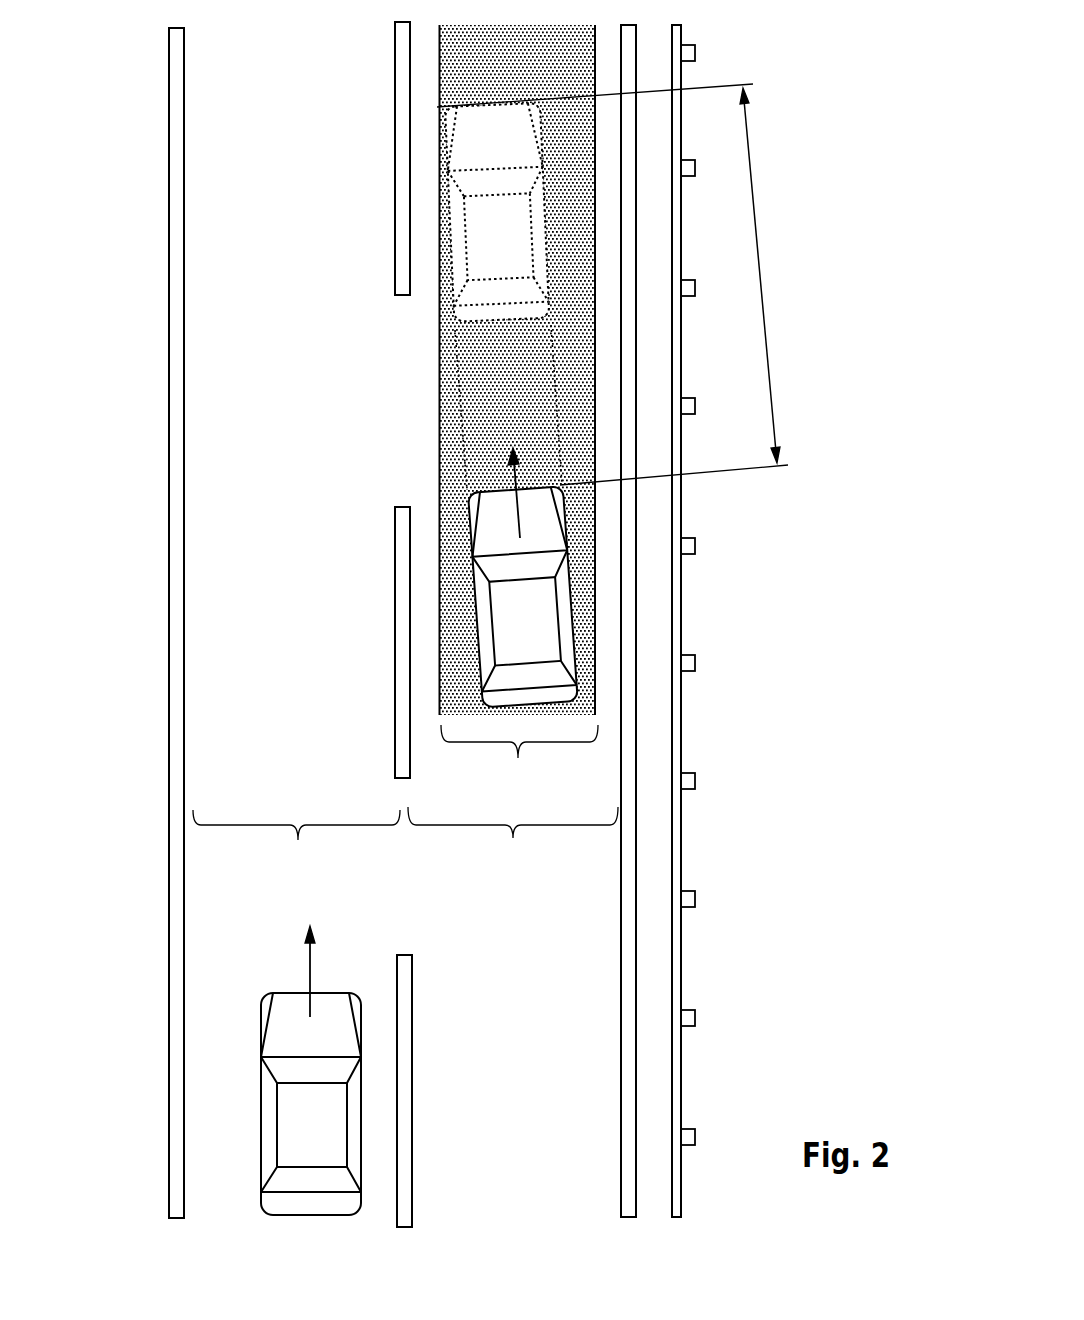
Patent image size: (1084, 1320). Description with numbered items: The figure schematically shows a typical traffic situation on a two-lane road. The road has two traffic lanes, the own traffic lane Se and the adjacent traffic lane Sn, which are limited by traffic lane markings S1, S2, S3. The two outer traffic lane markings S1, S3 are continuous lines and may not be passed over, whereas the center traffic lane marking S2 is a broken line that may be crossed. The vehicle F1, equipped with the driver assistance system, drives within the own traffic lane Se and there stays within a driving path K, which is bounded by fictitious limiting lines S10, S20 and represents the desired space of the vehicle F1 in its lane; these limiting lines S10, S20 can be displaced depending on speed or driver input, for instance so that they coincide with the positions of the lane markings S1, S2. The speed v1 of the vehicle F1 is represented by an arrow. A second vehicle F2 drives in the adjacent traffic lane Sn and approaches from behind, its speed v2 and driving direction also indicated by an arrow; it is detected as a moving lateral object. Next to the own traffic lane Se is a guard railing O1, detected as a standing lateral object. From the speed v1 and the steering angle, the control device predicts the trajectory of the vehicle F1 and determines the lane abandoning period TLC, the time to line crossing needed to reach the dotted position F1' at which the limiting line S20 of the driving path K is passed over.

The outer traffic lane marking S1 is at (618, 1062).
The center traffic lane marking S2 is at (393, 740).
The outer traffic lane marking S3 is at (187, 532).
The limiting line S10 is at (600, 603).
The limiting line S20 is at (438, 377).
The guard railing O1 is at (683, 956).
The vehicle F1 is at (449, 596).
The position of the vehicle F1' is at (404, 212).
The vehicle F2 is at (337, 1113).
The speed v1 is at (513, 471).
The speed v2 is at (307, 953).
The lane abandoning period TLC is at (763, 287).
The driving path K is at (519, 764).
The adjacent traffic lane Sn is at (296, 843).
The own traffic lane Se is at (513, 841).